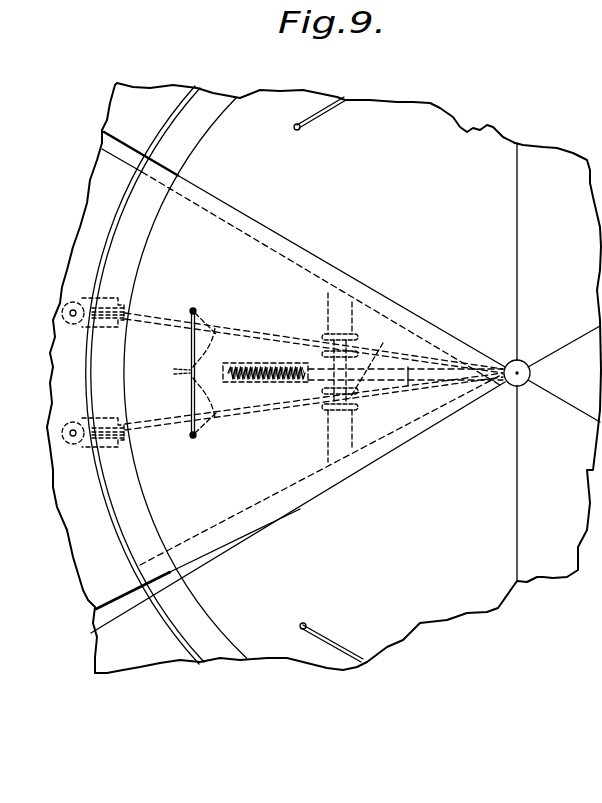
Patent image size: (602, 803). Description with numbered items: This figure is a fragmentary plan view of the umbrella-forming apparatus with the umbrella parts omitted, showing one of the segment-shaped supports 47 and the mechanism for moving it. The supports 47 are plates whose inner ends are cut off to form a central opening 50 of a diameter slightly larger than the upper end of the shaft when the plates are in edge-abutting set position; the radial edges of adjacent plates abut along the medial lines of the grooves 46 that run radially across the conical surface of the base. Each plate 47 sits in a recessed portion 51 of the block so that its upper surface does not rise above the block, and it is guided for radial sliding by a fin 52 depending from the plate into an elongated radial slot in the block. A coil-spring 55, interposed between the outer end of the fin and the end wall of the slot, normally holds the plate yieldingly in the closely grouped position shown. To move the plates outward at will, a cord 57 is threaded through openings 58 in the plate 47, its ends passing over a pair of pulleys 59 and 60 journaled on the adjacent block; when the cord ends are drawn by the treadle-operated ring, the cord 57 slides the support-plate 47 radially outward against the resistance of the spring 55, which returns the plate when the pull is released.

The groove 46 is at (119, 615).
The segment-shaped support 47 is at (530, 636).
The central opening 50 is at (523, 362).
The recessed portion 51 is at (140, 190).
The fin 52 is at (382, 391).
The coil-spring 55 is at (261, 358).
The cord 57 is at (342, 648).
The opening 58 is at (194, 311).
The pulley 59 is at (127, 308).
The pulley 60 is at (355, 350).